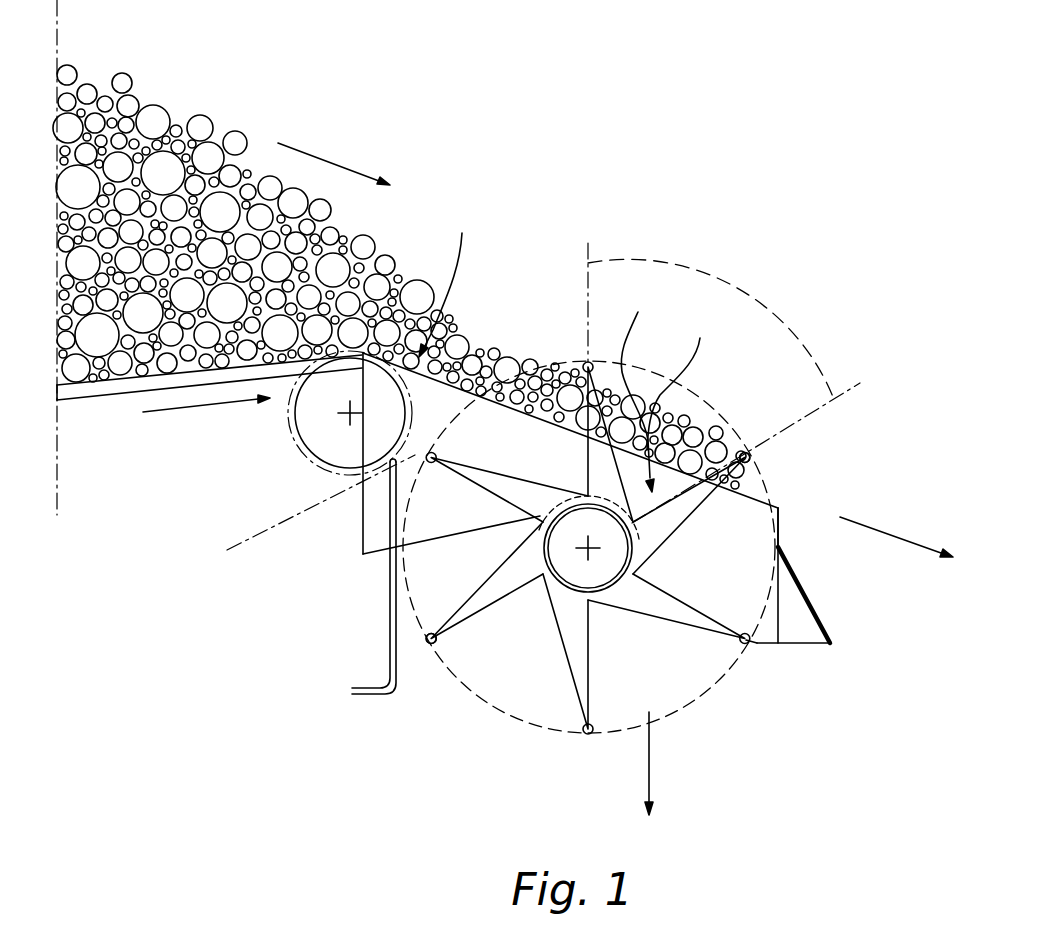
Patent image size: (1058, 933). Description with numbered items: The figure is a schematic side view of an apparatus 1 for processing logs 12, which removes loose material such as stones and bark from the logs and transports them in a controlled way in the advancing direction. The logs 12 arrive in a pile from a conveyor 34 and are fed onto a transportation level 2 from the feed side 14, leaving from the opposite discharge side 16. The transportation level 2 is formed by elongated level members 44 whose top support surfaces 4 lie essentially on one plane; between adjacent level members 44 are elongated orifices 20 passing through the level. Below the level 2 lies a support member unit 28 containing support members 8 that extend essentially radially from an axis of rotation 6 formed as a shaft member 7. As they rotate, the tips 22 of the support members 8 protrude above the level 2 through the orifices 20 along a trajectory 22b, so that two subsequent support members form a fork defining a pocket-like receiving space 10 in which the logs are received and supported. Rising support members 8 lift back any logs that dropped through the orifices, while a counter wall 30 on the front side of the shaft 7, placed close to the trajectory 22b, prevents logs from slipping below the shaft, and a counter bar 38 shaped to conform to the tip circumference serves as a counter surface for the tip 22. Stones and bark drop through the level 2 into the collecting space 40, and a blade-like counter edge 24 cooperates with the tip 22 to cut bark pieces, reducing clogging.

The apparatus 1 is at (690, 186).
The transportation level 2 is at (795, 517).
The support surfaces 4 is at (517, 395).
The axis of rotation 6 is at (588, 548).
The shaft member 7 is at (616, 560).
The support members 8 is at (637, 387).
The receiving space 10 is at (650, 342).
The logs 12 is at (192, 97).
The feed side 14 is at (449, 278).
The discharge side 16 is at (759, 470).
The orifices 20 is at (686, 377).
The tip 22 is at (745, 448).
The trajectory 22b is at (445, 668).
The counter edge 24 is at (793, 538).
The support member units 28 is at (476, 726).
The counter wall 30 is at (392, 612).
The conveyor 34 is at (133, 384).
The counter bar 38 is at (433, 414).
The collecting space 40 is at (679, 766).
The level members 44 is at (757, 476).